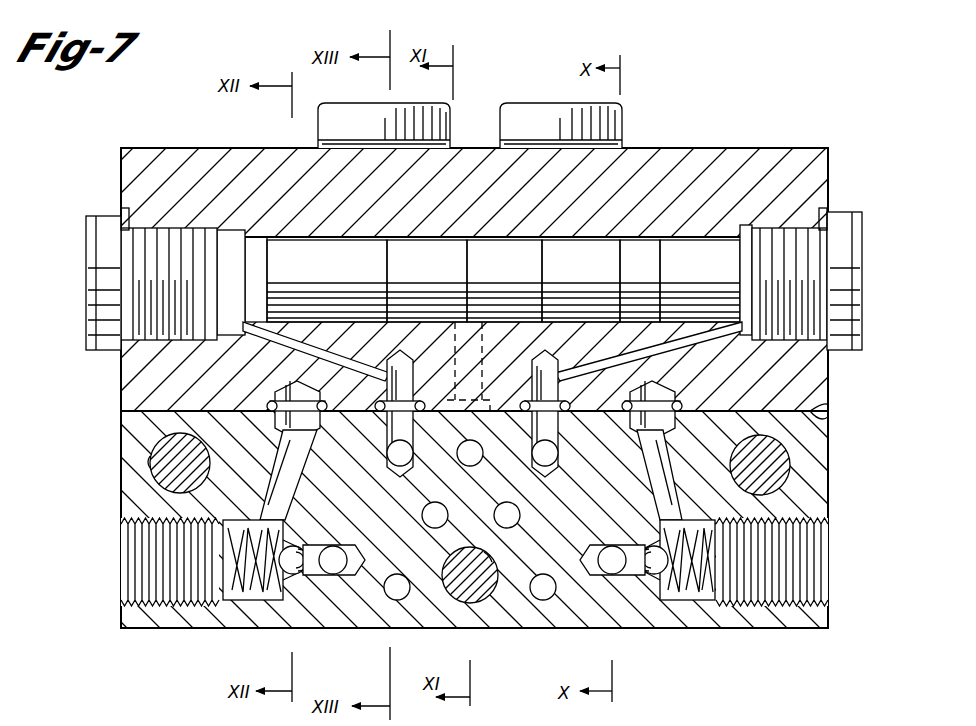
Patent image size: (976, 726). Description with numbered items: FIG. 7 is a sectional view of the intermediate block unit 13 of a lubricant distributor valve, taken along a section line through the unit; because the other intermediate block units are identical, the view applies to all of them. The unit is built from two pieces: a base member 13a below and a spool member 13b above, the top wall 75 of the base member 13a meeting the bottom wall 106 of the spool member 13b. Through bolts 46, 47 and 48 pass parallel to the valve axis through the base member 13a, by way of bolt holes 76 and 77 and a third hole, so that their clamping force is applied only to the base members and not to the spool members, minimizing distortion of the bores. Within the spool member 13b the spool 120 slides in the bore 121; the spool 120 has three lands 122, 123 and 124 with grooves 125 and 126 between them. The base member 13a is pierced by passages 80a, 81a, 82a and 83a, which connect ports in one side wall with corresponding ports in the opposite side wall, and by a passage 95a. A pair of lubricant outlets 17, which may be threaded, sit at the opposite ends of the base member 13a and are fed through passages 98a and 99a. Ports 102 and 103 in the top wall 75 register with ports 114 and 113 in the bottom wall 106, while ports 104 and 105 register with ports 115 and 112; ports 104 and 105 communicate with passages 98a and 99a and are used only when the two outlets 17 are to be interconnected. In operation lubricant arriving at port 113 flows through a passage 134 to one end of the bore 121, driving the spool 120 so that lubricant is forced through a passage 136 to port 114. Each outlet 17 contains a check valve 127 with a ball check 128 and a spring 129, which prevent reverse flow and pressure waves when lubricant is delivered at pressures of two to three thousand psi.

The intermediate block unit 13 is at (888, 396).
The base member 13a is at (834, 490).
The spool member 13b is at (832, 174).
The lubricant outlets 17 is at (140, 526).
The through bolt 46 is at (178, 447).
The through bolt 47 is at (458, 596).
The through bolt 48 is at (780, 468).
The top wall 75 is at (807, 404).
The bolt hole 76 is at (152, 465).
The bolt hole 77 is at (490, 600).
The passage 80a is at (428, 517).
The passage 81a is at (468, 462).
The passage 82a is at (514, 516).
The passage 83a is at (552, 592).
The passage 95a is at (338, 572).
The passage 98a is at (286, 456).
The passage 99a is at (651, 462).
The port 102 is at (410, 414).
The port 103 is at (558, 414).
The port 104 is at (312, 425).
The port 105 is at (670, 420).
The bottom wall 106 is at (828, 411).
The port 112 is at (658, 392).
The port 113 is at (531, 393).
The port 114 is at (412, 395).
The port 115 is at (292, 392).
The spool 120 is at (663, 242).
The bore 121 is at (636, 238).
The land 122 is at (290, 253).
The land 123 is at (494, 254).
The land 124 is at (696, 246).
The groove 125 is at (414, 254).
The groove 126 is at (568, 254).
The check valve 127 is at (256, 590).
The ball check 128 is at (298, 576).
The spring 129 is at (226, 592).
The passage 134 is at (256, 340).
The passage 136 is at (698, 334).